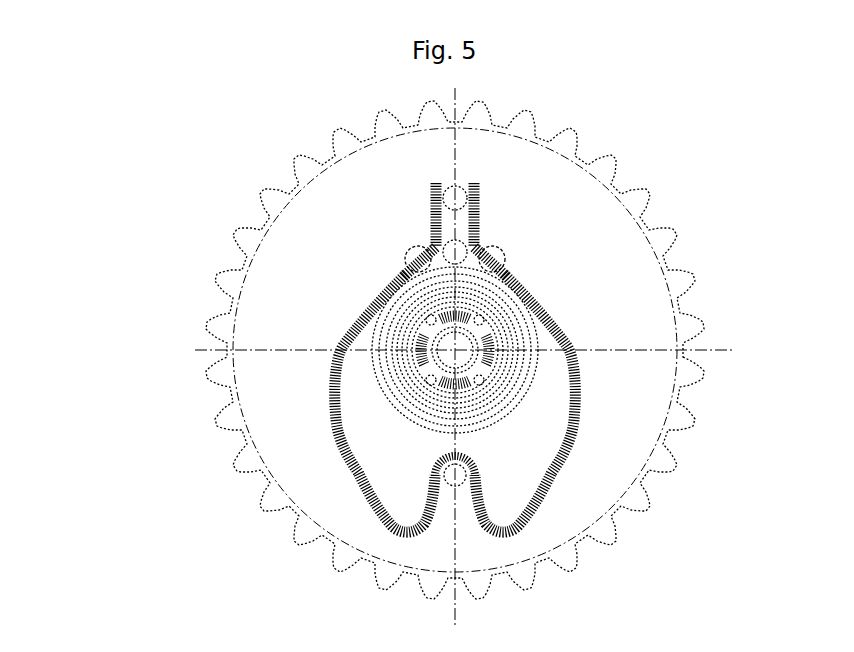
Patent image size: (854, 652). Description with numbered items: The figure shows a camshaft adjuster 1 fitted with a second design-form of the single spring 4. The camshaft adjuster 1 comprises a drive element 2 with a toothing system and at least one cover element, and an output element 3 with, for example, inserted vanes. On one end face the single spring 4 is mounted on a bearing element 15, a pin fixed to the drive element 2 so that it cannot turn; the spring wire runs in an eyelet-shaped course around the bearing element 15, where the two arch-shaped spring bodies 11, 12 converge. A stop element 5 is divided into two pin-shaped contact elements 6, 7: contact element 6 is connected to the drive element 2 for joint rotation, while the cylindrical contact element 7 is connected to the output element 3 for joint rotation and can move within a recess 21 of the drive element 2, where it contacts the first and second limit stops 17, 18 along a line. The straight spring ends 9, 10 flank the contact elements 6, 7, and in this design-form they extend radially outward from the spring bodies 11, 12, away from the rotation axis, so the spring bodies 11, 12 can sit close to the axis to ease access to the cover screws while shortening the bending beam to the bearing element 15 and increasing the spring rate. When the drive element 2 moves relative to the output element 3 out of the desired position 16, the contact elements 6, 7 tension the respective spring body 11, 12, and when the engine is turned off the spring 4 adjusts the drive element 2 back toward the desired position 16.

The camshaft adjuster 1 is at (455, 350).
The drive element 2 is at (290, 442).
The output element 3 is at (486, 256).
The spring 4 is at (343, 347).
The stop element 5 is at (338, 169).
The contact element 6 is at (455, 193).
The contact element 7 is at (440, 246).
The spring end 9 is at (430, 250).
The spring end 10 is at (477, 238).
The spring body 11 is at (333, 387).
The spring body 12 is at (563, 333).
The bearing element 15 is at (458, 475).
The desired position 16 is at (141, 186).
The first limit stop 17 is at (417, 263).
The second limit stop 18 is at (492, 261).
The recess 21 is at (632, 230).